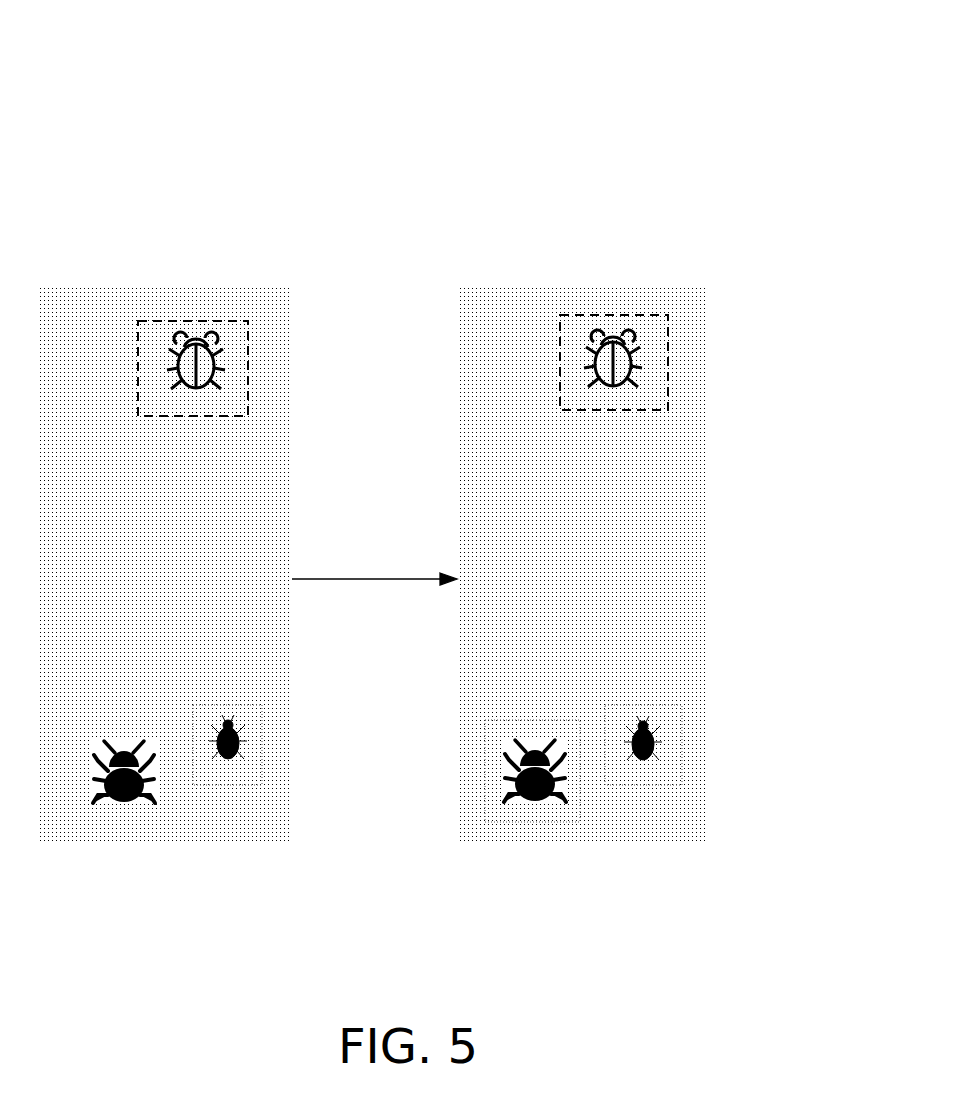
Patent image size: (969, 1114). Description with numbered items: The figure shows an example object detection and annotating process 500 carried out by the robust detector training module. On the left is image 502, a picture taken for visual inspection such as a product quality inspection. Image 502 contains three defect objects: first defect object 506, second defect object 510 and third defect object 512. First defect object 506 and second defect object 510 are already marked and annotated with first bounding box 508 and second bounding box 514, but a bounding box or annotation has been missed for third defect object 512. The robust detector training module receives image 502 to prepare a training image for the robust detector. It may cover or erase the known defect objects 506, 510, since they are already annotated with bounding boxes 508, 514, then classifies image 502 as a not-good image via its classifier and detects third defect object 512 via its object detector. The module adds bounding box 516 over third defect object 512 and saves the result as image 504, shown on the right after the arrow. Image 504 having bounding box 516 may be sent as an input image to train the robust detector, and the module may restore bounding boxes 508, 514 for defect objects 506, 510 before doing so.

The object detection and annotating process 500 is at (613, 136).
The image 502 is at (98, 287).
The image 504 is at (508, 287).
The first defect object 506 is at (177, 335).
The first bounding box 508 is at (245, 320).
The second defect object 510 is at (226, 762).
The third defect object 512 is at (115, 800).
The second bounding box 514 is at (248, 787).
The bounding box 516 is at (538, 823).